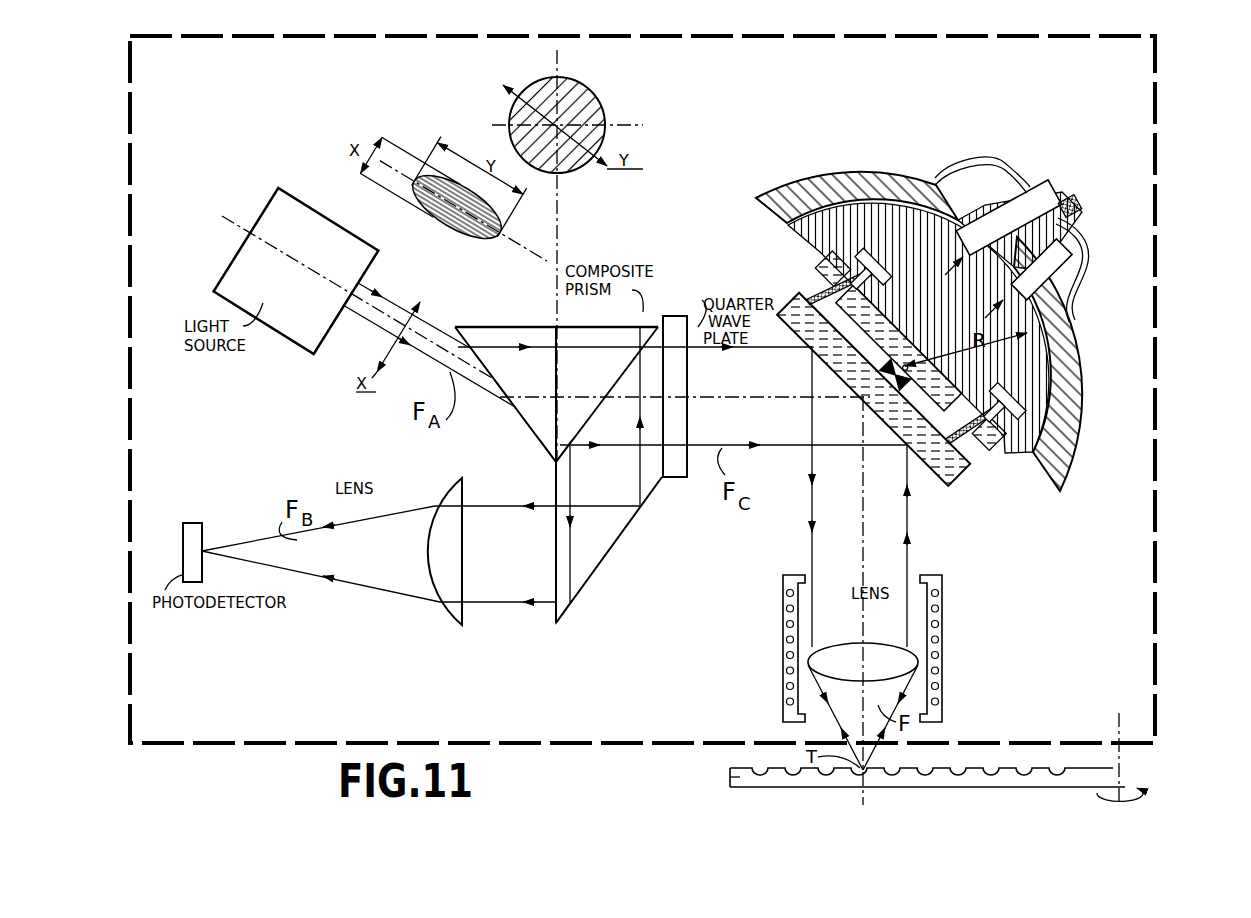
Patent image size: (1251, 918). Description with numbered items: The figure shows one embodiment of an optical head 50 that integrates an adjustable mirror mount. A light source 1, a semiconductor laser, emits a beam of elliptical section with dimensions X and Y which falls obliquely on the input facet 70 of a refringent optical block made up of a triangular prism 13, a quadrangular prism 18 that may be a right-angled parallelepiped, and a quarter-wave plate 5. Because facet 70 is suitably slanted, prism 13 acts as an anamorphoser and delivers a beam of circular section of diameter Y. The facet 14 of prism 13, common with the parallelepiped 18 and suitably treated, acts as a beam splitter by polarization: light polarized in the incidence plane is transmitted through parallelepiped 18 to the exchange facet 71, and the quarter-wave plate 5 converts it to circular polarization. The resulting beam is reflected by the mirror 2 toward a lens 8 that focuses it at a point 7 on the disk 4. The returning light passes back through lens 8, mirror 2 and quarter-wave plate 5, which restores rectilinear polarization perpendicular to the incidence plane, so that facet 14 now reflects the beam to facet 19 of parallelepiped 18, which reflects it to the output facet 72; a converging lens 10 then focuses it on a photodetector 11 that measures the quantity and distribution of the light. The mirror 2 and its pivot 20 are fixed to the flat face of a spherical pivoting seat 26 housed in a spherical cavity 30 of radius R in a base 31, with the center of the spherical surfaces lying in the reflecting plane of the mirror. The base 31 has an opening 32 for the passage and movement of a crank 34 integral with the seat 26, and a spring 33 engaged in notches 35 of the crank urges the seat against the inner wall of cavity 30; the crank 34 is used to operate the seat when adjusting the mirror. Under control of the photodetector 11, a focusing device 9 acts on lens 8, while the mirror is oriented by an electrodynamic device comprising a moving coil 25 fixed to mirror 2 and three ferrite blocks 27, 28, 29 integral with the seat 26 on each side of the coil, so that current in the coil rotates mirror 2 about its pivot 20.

The light source 1 is at (268, 205).
The mirror 2 is at (948, 484).
The disk 4 is at (730, 777).
The quarter-wave plate 5 is at (690, 314).
The point 7 is at (1138, 783).
The lens 8 is at (875, 652).
The focusing device 9 is at (793, 574).
The converging lens 10 is at (440, 500).
The photodetector 11 is at (192, 523).
The triangular prism 13 is at (540, 327).
The facet 14 is at (642, 327).
The quadrangular prism 18 is at (605, 530).
The facet 19 is at (650, 500).
The pivot 20 is at (906, 364).
The moving coil 25 is at (835, 297).
The spherical pivoting seat 26 is at (875, 198).
The ferrite block 27 is at (895, 325).
The ferrite block 28 is at (990, 440).
The ferrite block 29 is at (822, 262).
The spherical cavity 30 is at (1040, 465).
The base 31 is at (1082, 383).
The opening 32 is at (1088, 272).
The spring 33 is at (993, 168).
The crank 34 is at (1058, 190).
The notches 35 is at (1083, 212).
The optical head 50 is at (1164, 592).
The input facet 70 is at (522, 420).
The exchange facet 71 is at (672, 458).
The output facet 72 is at (553, 610).